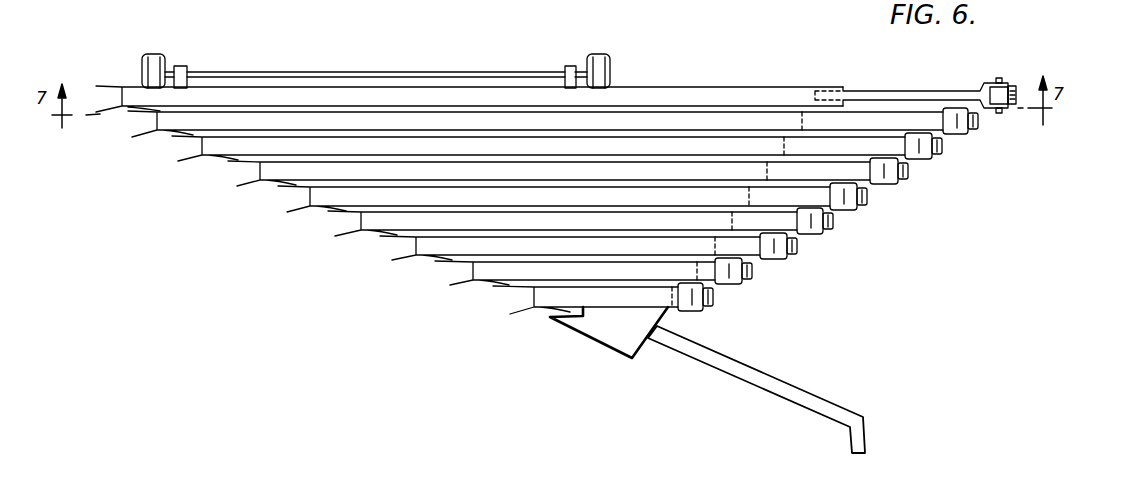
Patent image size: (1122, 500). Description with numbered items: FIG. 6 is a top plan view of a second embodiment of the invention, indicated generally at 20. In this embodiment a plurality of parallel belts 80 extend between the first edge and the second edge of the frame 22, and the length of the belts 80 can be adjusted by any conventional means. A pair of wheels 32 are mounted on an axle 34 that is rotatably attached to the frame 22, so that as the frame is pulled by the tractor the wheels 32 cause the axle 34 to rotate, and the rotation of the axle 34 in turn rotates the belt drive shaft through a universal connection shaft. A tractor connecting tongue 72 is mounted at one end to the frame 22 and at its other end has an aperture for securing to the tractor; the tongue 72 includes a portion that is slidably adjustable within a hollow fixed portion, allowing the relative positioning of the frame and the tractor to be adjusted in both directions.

The leaf spring assembly 20 is at (322, 328).
The frame 22 is at (633, 345).
The wheels 32 is at (156, 58).
The axle 34 is at (414, 72).
The tractor connecting tongue 72 is at (852, 413).
The parallel belts 80 is at (770, 90).